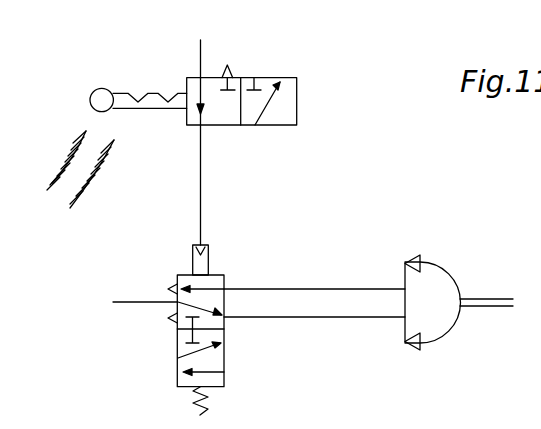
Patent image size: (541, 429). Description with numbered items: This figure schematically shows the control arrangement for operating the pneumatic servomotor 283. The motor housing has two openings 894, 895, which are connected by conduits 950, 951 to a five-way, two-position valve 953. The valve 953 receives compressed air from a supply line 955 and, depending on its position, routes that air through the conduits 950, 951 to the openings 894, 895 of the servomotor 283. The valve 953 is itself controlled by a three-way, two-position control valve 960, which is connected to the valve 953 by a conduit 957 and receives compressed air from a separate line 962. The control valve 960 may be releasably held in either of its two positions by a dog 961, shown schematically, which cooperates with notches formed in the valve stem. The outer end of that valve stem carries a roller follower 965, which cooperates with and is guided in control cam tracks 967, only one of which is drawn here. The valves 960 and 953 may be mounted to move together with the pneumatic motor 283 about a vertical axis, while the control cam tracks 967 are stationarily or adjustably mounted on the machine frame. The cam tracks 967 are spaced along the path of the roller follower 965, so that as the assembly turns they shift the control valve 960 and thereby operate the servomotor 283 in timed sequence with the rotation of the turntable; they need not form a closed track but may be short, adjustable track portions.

The pneumatic servomotor 283 is at (452, 280).
The opening 894 is at (400, 287).
The opening 895 is at (400, 320).
The conduit 950 is at (285, 289).
The conduit 951 is at (287, 317).
The five-way, two-position valve 953 is at (224, 387).
The supply line 955 is at (122, 302).
The conduit 957 is at (201, 183).
The three-way, two-position valve 960 is at (297, 125).
The dog 961 is at (138, 92).
The line 962 is at (205, 52).
The roller follower 965 is at (88, 100).
The control cam tracks 967 is at (63, 182).